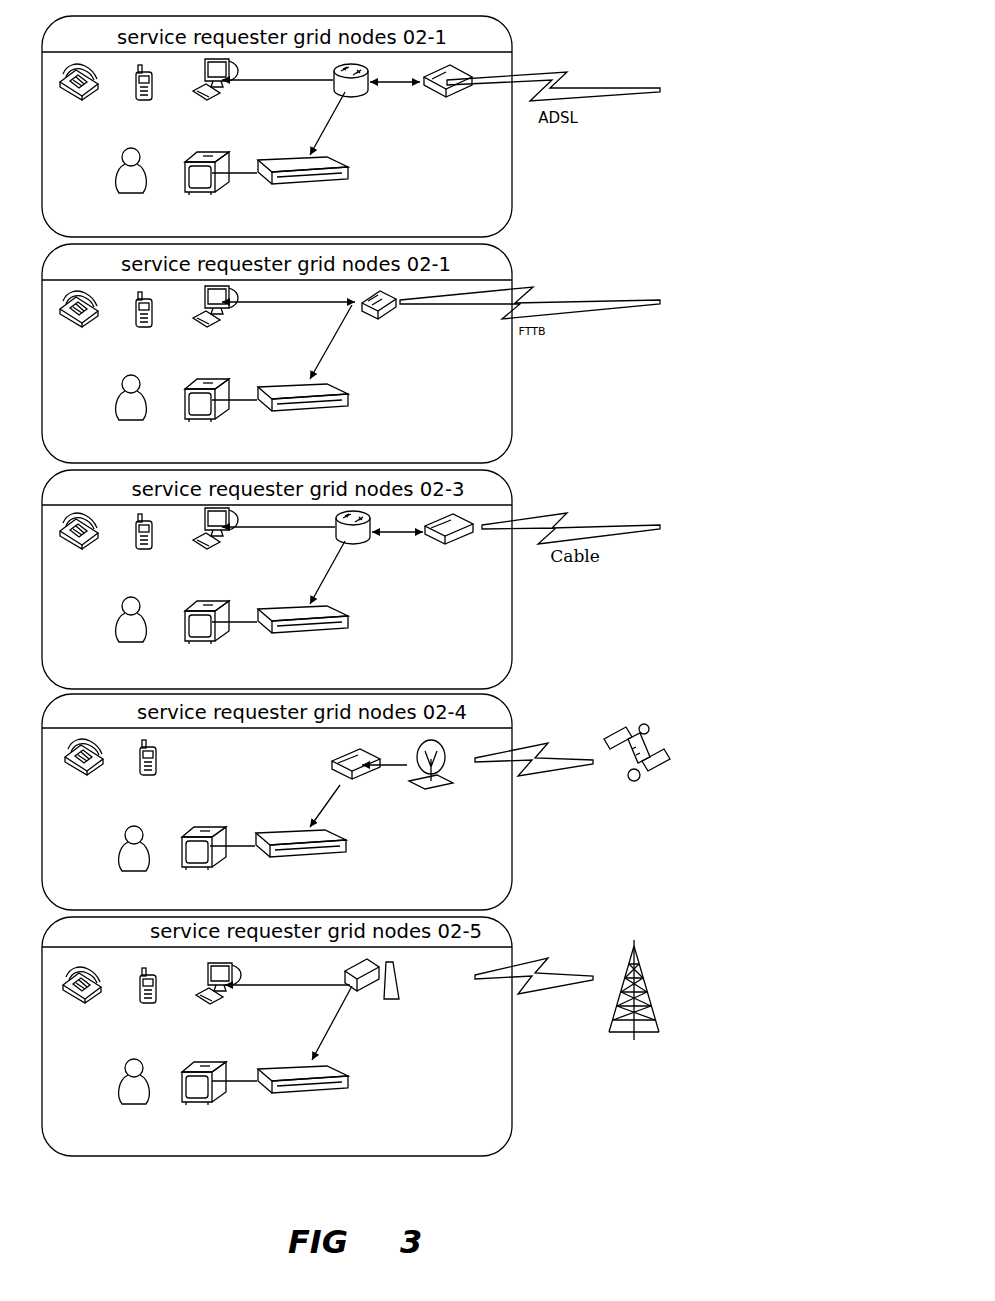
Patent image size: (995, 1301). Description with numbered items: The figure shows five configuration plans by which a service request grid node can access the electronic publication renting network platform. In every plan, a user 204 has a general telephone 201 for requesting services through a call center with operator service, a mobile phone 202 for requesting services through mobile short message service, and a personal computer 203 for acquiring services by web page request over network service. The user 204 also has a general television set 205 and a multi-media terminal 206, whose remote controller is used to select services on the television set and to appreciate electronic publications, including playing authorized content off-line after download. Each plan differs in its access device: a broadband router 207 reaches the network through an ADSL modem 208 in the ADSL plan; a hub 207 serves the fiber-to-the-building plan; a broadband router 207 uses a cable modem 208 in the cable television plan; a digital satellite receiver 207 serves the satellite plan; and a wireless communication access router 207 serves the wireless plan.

The general telephone 201 is at (78, 564).
The mobile phone 202 is at (148, 563).
The personal computer 203 is at (219, 560).
The user 204 is at (133, 644).
The general television set 205 is at (212, 646).
The multi-media terminal 206 is at (307, 650).
The broadband router 207 is at (392, 568).
The ADSL modem 208 is at (453, 336).